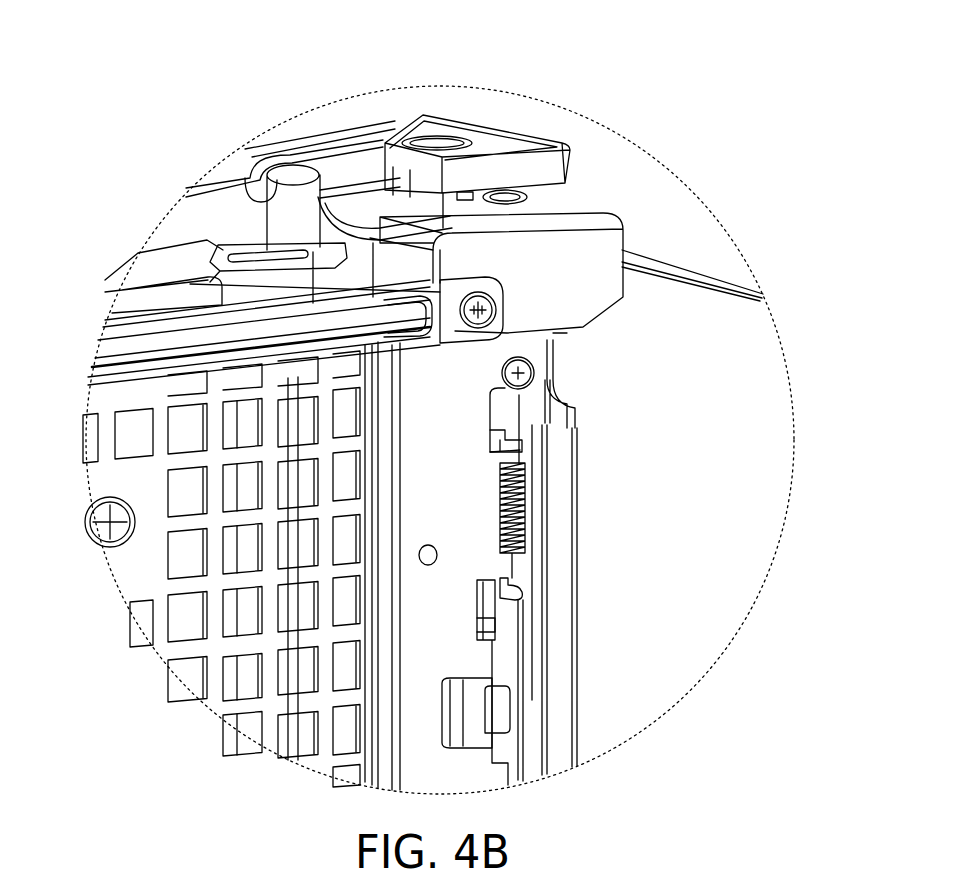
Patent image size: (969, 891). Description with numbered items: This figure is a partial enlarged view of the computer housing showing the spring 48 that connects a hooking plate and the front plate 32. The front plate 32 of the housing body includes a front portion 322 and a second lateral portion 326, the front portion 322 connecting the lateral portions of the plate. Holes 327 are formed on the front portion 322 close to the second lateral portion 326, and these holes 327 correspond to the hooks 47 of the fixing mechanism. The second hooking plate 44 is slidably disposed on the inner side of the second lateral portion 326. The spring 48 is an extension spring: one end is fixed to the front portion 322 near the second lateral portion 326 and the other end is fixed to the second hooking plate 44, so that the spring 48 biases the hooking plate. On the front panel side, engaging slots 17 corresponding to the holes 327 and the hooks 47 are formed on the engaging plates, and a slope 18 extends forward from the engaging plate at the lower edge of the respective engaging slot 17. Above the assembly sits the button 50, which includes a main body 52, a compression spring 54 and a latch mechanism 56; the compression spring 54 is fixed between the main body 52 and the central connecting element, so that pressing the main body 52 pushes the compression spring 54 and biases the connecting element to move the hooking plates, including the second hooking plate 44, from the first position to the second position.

The button 50 is at (660, 77).
The latch mechanism 56 is at (440, 147).
The main body 52 is at (486, 116).
The compression spring 54 is at (552, 200).
The front plate 32 is at (458, 370).
The second lateral portion 326 is at (575, 408).
The front portion 322 is at (460, 417).
The spring 48 is at (527, 505).
The hook 47 is at (490, 600).
The second hooking plate 44 is at (448, 698).
The engaging slot 17 is at (280, 667).
The hole 327 is at (480, 623).
The slope 18 is at (480, 638).